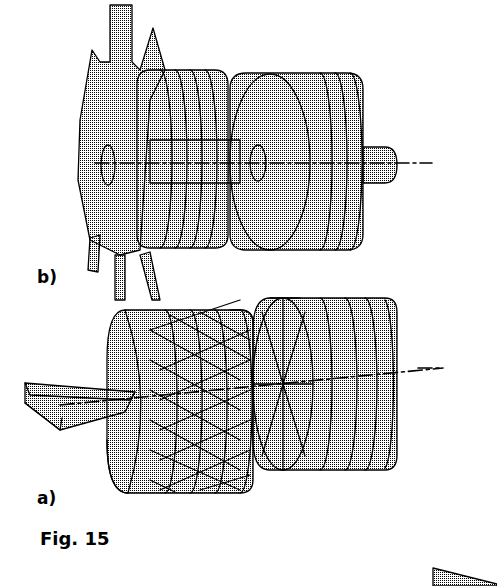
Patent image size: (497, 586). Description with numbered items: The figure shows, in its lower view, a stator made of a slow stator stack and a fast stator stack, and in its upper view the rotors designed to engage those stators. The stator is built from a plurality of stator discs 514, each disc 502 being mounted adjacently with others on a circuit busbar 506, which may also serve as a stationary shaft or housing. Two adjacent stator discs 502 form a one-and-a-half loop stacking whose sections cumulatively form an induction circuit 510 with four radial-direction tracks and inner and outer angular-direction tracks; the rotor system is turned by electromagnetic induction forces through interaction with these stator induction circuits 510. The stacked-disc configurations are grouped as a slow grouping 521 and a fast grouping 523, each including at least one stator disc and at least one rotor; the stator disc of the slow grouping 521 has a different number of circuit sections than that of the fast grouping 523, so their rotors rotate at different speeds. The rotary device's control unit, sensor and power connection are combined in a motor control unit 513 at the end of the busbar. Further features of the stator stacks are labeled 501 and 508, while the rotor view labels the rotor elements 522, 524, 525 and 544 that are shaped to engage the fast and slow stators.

The rotor drum 501 is at (334, 392).
The stator disc 502 is at (300, 468).
The circuit busbar 506 is at (80, 417).
The drum rim 508 is at (130, 475).
The induction circuit 510 is at (316, 456).
The motor control unit 513 is at (62, 432).
The stator disc 514 is at (107, 345).
The slow grouping 521 is at (161, 420).
The drum 522 is at (211, 54).
The fast grouping 523 is at (354, 479).
The drum body 524 is at (323, 141).
The drum surface 525 is at (323, 140).
The ring section 544 is at (370, 74).